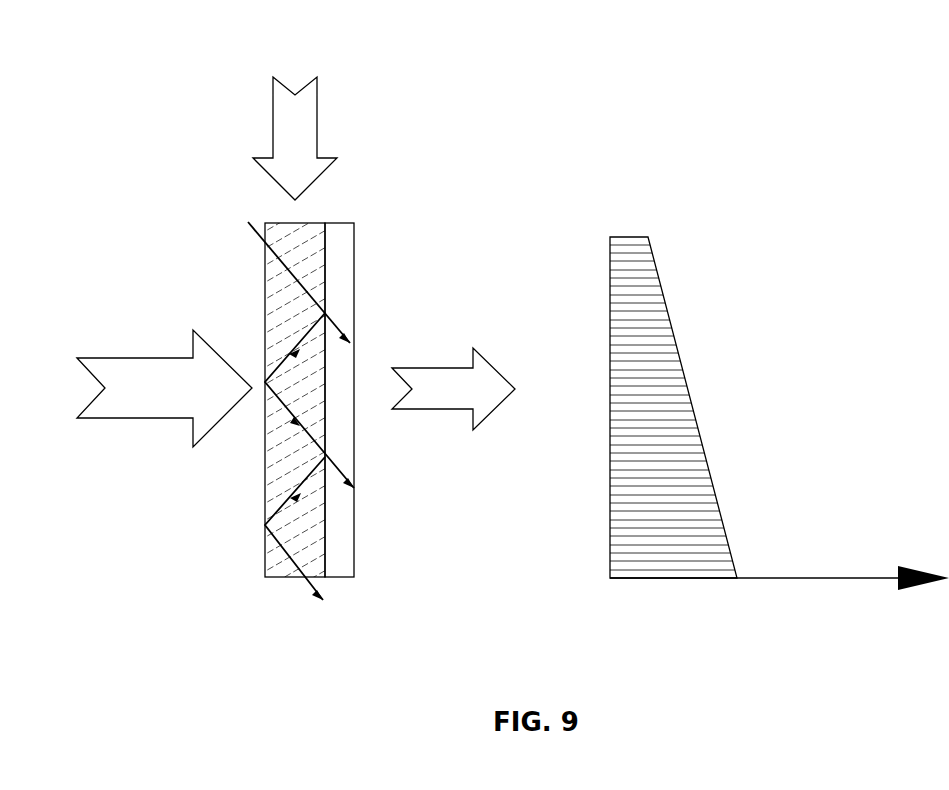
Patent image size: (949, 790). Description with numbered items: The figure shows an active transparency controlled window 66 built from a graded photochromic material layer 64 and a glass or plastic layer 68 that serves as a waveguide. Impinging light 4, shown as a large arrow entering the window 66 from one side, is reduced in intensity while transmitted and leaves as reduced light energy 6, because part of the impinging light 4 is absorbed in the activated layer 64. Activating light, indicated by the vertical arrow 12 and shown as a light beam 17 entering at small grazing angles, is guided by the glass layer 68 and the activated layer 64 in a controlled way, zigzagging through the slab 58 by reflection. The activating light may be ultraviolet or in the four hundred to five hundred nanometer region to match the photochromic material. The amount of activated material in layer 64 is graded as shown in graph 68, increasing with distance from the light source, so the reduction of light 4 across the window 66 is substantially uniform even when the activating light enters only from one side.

The impinging light 4 is at (120, 358).
The reduced light energy 6 is at (415, 368).
The pump light 12 is at (318, 106).
The light beam 17 is at (312, 587).
The light guide slab 58 is at (285, 578).
The graded photochromic material layer 64 is at (340, 578).
The active transparency controlled window 66 is at (431, 146).
The glass or plastic layer 68 is at (726, 311).